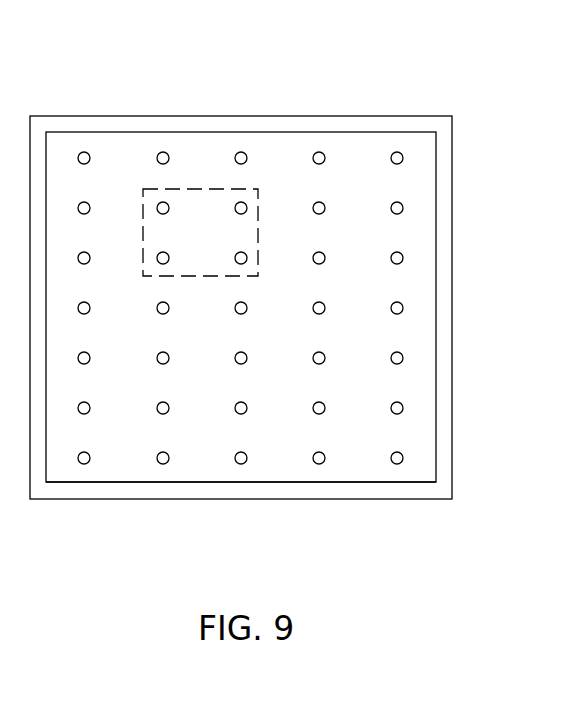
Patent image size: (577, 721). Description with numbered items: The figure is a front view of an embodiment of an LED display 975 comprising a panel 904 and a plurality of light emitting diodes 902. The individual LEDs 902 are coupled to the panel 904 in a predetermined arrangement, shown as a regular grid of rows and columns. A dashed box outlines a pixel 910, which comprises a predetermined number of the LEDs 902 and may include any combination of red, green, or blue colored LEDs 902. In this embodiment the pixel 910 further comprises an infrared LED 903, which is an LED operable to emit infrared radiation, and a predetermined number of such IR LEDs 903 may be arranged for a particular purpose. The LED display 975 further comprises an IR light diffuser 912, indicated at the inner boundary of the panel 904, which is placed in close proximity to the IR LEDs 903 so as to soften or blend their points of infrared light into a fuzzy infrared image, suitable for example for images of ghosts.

The light emitting diodes 902 is at (246, 201).
The infrared LED 903 is at (158, 202).
The panel 904 is at (452, 386).
The pixel 910 is at (202, 189).
The IR light diffuser 912 is at (411, 482).
The LED display 975 is at (452, 172).